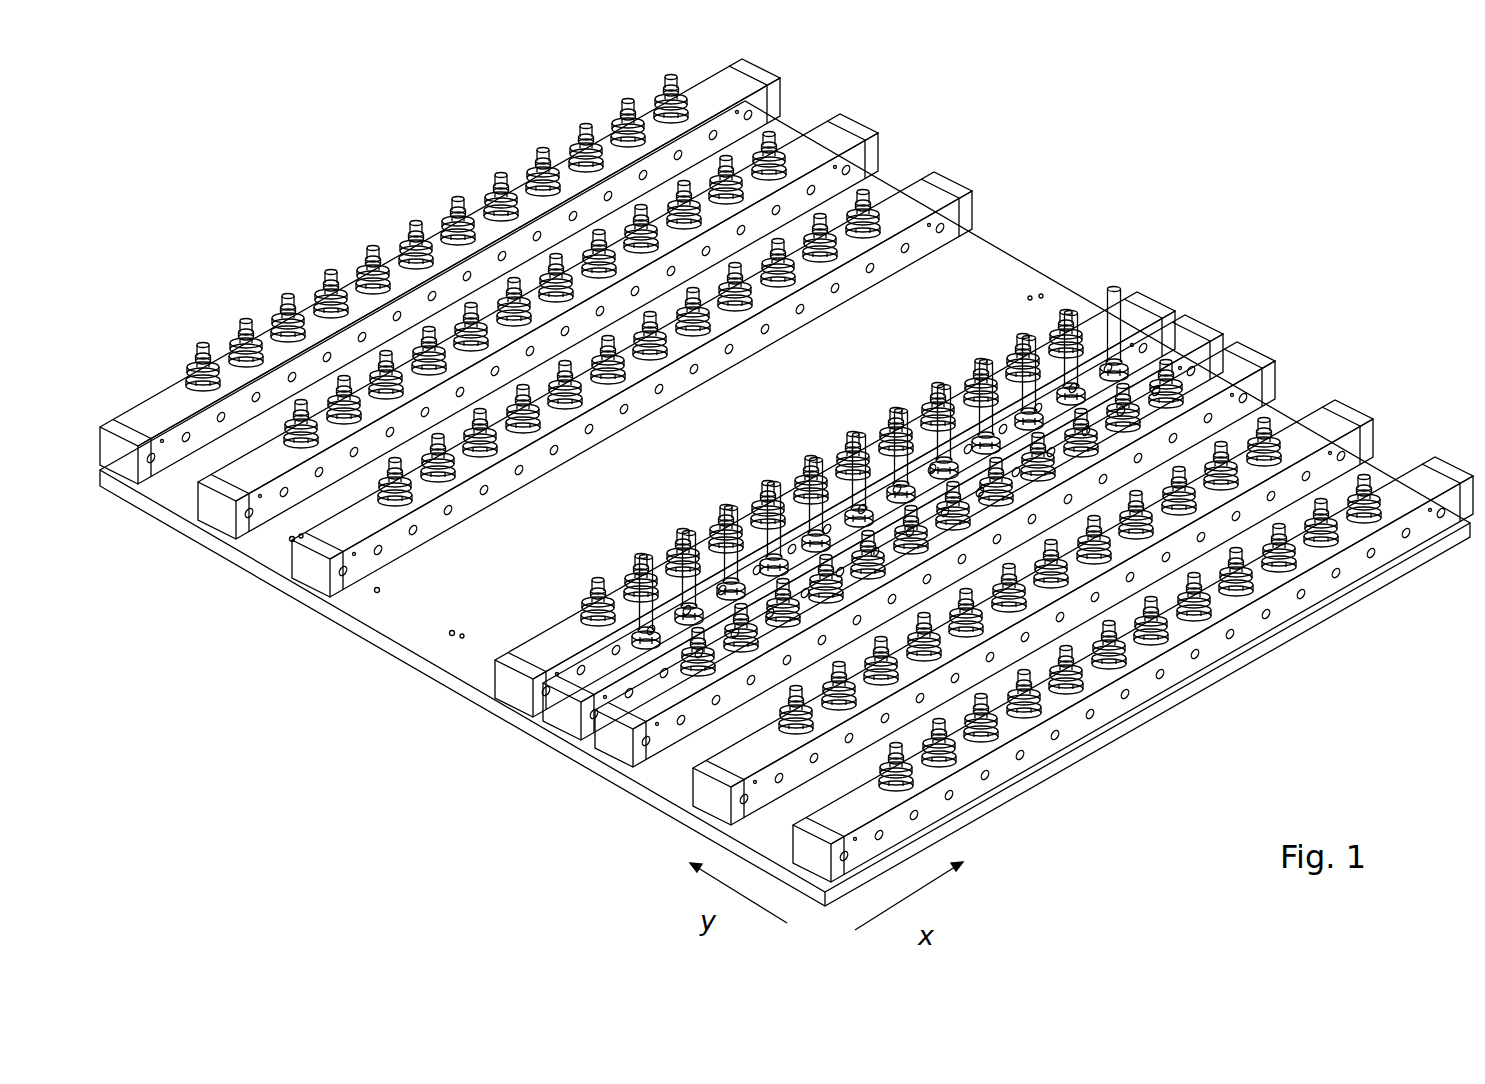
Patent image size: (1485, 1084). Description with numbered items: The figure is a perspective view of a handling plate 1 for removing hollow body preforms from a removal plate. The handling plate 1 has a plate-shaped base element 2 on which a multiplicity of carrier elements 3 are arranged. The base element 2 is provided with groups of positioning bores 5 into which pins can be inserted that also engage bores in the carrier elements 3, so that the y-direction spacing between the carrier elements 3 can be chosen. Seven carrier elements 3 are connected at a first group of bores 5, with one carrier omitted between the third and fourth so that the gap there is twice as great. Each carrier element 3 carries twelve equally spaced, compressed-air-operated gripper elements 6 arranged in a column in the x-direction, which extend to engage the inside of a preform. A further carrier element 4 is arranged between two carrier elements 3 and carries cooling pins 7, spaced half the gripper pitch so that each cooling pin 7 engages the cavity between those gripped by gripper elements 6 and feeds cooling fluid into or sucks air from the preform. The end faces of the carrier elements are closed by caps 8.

The handling plate 1 is at (786, 499).
The base element 2 is at (480, 657).
The carrier element 3 is at (760, 58).
The further carrier element 4 is at (1178, 343).
The positioning bore 5 is at (292, 541).
The gripper element 6 is at (202, 343).
The cooling pin 7 is at (640, 627).
The end block of rail 8 is at (873, 147).